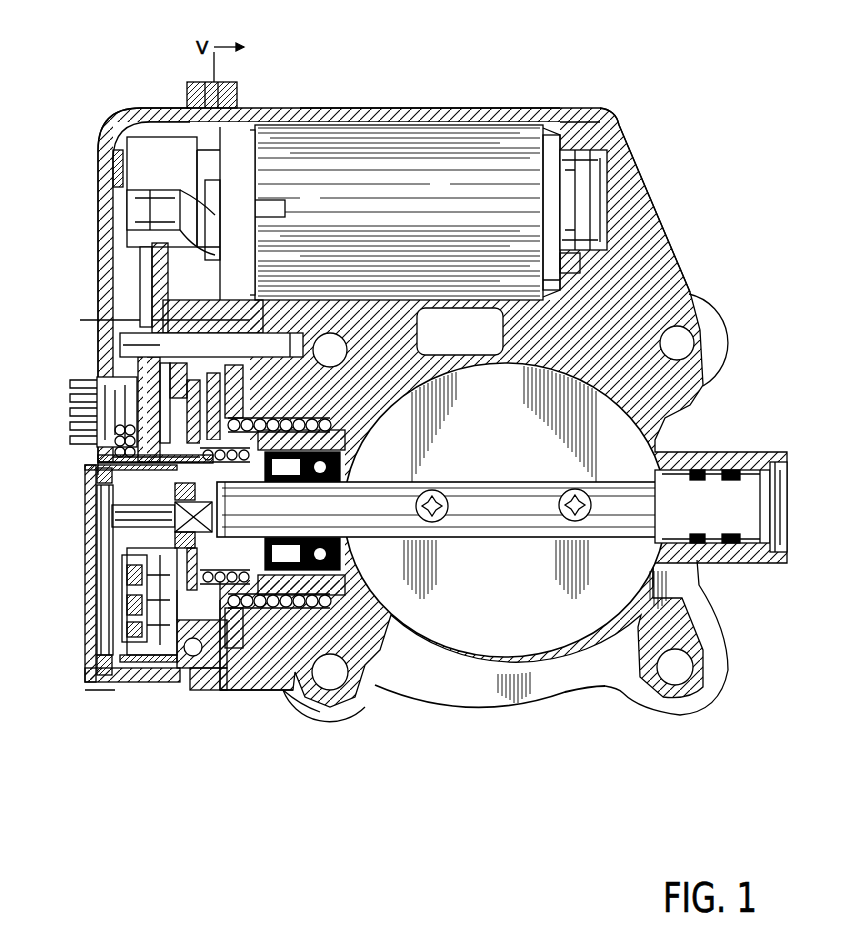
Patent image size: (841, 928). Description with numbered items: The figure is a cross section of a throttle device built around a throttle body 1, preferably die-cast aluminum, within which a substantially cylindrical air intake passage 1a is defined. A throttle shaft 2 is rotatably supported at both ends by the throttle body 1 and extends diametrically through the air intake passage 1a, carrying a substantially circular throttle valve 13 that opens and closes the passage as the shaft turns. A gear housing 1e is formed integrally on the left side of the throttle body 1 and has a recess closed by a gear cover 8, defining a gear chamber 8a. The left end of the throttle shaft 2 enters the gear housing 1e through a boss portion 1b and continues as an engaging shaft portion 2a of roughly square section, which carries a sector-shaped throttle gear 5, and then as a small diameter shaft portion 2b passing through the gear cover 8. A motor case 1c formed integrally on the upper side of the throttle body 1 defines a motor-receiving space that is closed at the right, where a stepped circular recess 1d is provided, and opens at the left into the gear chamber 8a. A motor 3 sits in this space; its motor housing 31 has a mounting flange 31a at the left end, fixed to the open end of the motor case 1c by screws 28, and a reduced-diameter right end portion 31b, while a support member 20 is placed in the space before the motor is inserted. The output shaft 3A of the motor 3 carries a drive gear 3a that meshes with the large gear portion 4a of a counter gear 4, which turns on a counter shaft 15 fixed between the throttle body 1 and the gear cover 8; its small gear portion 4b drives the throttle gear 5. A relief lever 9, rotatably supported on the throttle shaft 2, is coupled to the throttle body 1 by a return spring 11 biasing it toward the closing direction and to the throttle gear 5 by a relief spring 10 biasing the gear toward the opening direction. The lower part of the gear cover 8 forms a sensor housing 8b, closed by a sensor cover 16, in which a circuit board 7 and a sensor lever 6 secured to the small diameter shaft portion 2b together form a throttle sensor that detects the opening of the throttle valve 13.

The throttle body 1 is at (698, 290).
The air intake passage 1a is at (549, 606).
The boss portion 1b is at (282, 692).
The motor case 1c is at (418, 108).
The stepped circular recess 1d is at (602, 258).
The gear housing 1e is at (250, 670).
The throttle shaft 2 is at (514, 512).
The engaging shaft portion 2a is at (110, 512).
The small diameter shaft portion 2b is at (108, 503).
The motor 3 is at (365, 150).
The output shaft 3A is at (108, 205).
The drive gear 3a is at (120, 225).
The counter gear 4 is at (100, 383).
The large gear portion 4a is at (100, 457).
The small gear portion 4b is at (97, 330).
The throttle gear 5 is at (97, 447).
The sensor lever 6 is at (127, 655).
The circuit board 7 is at (90, 666).
The gear cover 8 is at (100, 277).
The gear chamber 8a is at (100, 298).
The sensor housing 8b is at (97, 688).
The relief lever 9 is at (198, 660).
The relief spring 10 is at (192, 658).
The return spring 11 is at (300, 605).
The throttle valve 13 is at (708, 424).
The counter shaft 15 is at (115, 342).
The sensor cover 16 is at (85, 583).
The support member 20 is at (583, 128).
The screws 28 is at (205, 230).
The motor housing 31 is at (488, 150).
The mounting flange 31a is at (226, 170).
The right end portion 31b is at (600, 190).